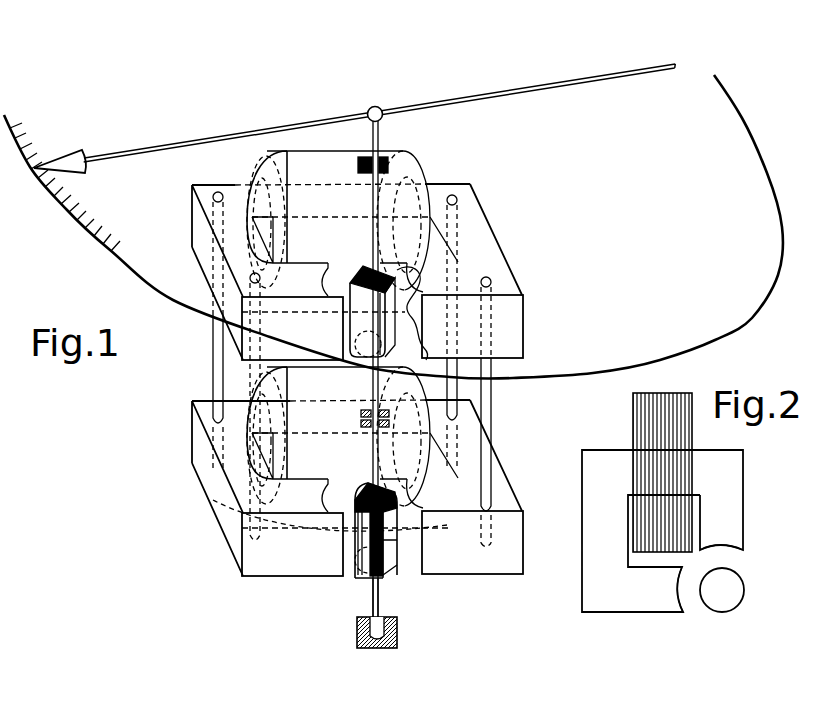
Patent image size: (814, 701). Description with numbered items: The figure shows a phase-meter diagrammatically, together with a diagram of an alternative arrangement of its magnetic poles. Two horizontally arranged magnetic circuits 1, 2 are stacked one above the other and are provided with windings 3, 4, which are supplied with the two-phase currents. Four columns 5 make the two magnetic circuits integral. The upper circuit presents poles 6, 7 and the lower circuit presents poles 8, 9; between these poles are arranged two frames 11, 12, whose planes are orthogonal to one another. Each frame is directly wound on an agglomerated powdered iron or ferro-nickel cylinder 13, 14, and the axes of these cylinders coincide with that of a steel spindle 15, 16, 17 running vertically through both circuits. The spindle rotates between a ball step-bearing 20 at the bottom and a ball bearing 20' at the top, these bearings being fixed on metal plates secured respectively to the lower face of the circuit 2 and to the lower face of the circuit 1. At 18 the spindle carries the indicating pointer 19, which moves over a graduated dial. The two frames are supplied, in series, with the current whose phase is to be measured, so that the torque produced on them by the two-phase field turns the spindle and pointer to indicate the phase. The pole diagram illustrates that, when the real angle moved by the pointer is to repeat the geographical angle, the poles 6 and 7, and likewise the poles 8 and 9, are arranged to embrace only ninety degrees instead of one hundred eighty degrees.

In FIG. 1, the magnetic circuit 1 is at (485, 237).
In FIG. 2, the magnetic circuit 1 is at (728, 475).
In FIG. 1, the magnetic circuit 2 is at (498, 482).
In FIG. 1, the winding 3 is at (316, 167).
In FIG. 2, the winding 3 is at (652, 429).
In FIG. 1, the winding 4 is at (293, 388).
In FIG. 1, the columns 5 is at (216, 361).
In FIG. 1, the pole 6 is at (318, 279).
In FIG. 2, the pole 6 is at (670, 589).
In FIG. 1, the pole 7 is at (423, 279).
In FIG. 2, the pole 7 is at (721, 533).
In FIG. 1, the pole 8 is at (316, 495).
In FIG. 1, the pole 9 is at (426, 493).
In FIG. 1, the frame 11 is at (412, 313).
In FIG. 1, the frame 12 is at (373, 577).
In FIG. 1, the powdered iron cylinder 13 is at (372, 311).
In FIG. 2, the powdered iron cylinder 13 is at (735, 589).
In FIG. 1, the powdered iron cylinder 14 is at (389, 562).
In FIG. 1, the steel spindle 15 is at (380, 603).
In FIG. 1, the steel spindle 16 is at (378, 452).
In FIG. 1, the steel spindle 17 is at (373, 239).
In FIG. 1, the pointer attachment point 18 is at (381, 111).
In FIG. 1, the indicating pointer 19 is at (157, 147).
In FIG. 1, the ball step-bearing 20 is at (399, 632).
In FIG. 1, the ball bearing 20' is at (393, 150).